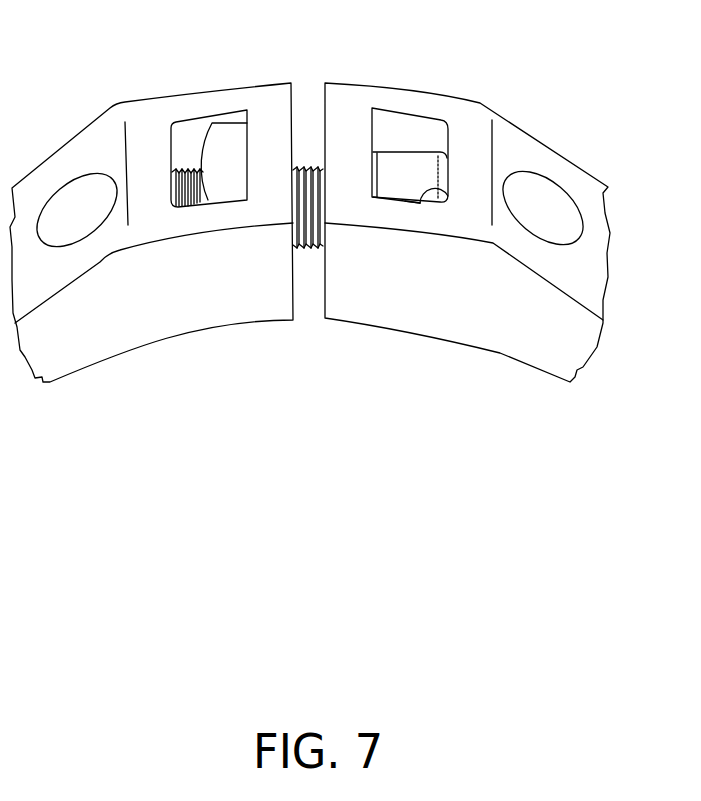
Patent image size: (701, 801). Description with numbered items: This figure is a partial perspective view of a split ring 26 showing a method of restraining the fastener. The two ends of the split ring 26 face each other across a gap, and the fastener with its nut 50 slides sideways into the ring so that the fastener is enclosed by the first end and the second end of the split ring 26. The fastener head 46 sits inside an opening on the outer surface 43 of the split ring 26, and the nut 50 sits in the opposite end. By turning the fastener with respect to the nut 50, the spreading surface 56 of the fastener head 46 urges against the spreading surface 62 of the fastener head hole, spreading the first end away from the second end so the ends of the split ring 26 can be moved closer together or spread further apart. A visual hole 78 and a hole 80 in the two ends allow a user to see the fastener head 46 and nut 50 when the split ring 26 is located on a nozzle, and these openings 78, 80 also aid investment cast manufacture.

The split ring 26 is at (208, 294).
The outer surface 43 is at (420, 203).
The fastener head 46 is at (427, 167).
The nut 50 is at (225, 137).
The spreading surface 56 is at (352, 210).
The spreading surface 62 is at (450, 140).
The visual hole 78 is at (400, 112).
The hole 80 is at (182, 121).